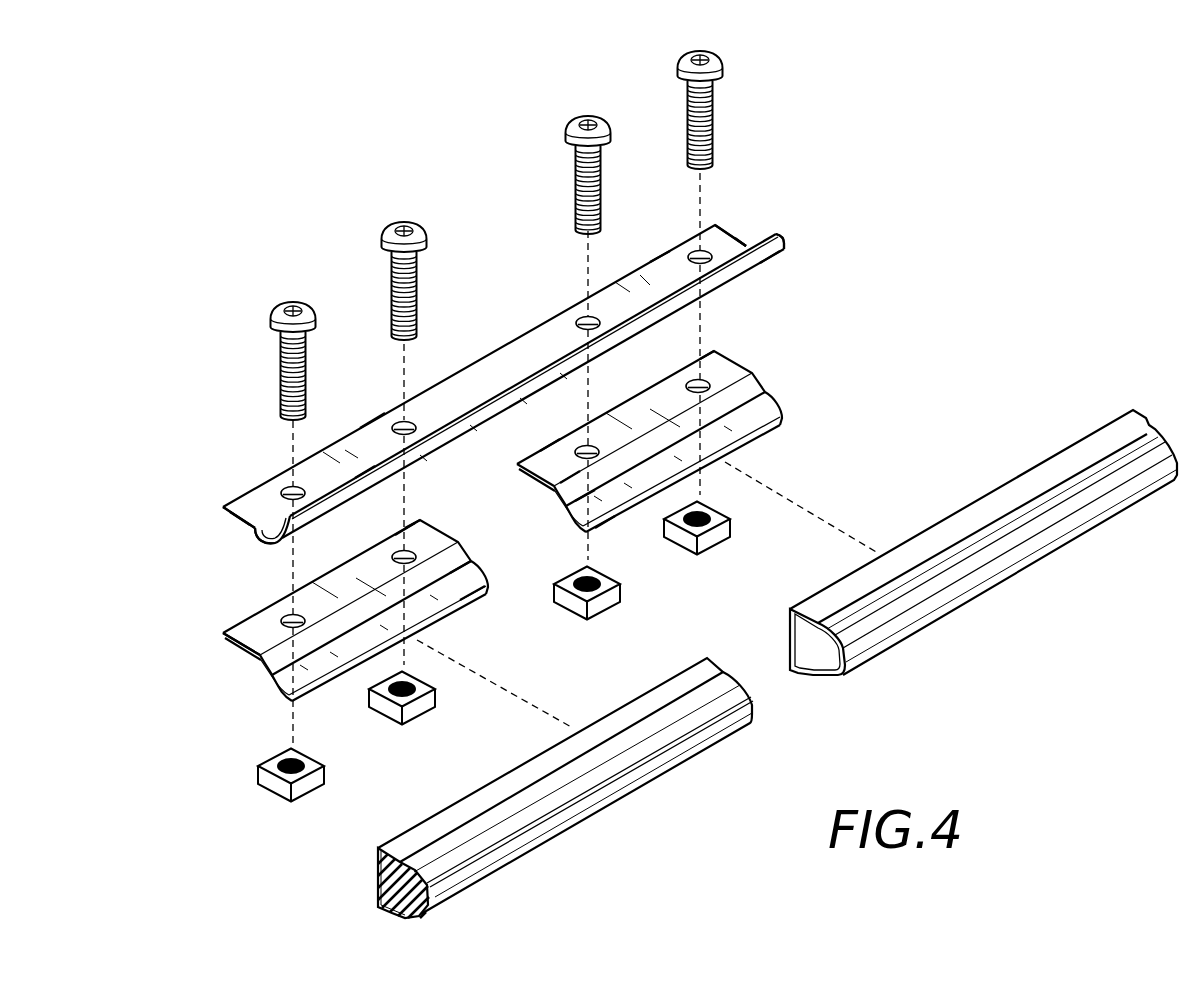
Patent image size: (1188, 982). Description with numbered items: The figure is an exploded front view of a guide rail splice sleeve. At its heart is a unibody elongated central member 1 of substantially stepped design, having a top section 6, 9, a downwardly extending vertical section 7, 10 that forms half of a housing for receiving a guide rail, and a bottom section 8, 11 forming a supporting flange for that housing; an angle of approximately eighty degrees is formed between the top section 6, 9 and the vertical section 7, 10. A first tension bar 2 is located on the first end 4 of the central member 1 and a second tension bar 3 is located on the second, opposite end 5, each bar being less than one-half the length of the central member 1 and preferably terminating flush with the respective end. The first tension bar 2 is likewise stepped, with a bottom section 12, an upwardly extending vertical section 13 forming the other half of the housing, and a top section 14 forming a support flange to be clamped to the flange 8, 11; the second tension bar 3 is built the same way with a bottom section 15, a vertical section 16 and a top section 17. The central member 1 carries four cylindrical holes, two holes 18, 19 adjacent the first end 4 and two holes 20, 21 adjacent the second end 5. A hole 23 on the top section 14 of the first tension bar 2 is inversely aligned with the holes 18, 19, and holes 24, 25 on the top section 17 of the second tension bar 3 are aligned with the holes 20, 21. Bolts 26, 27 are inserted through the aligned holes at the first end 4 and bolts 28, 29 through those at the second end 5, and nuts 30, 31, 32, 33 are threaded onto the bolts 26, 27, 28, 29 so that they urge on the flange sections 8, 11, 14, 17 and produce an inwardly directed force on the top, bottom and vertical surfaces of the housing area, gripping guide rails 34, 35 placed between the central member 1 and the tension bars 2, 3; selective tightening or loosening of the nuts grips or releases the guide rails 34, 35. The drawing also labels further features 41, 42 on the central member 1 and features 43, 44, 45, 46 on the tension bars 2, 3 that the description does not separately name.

The elongated central member 1 is at (490, 365).
The first tension bar 2 is at (265, 653).
The second tension bar 3 is at (755, 378).
The first end 4 is at (372, 418).
The second end 5 is at (660, 256).
The top section 6 is at (364, 488).
The vertical section 7 is at (262, 538).
The bottom section 8 is at (233, 506).
The top section 9 is at (766, 250).
The vertical section 10 is at (775, 232).
The bottom section 11 is at (726, 232).
The bottom section 12 is at (468, 598).
The vertical section 13 is at (462, 578).
The top section 14 is at (432, 543).
The bottom section 15 is at (602, 526).
The vertical section 16 is at (580, 518).
The top section 17 is at (540, 465).
The hole 18 is at (288, 488).
The hole 19 is at (410, 424).
The hole 20 is at (582, 316).
The hole 21 is at (692, 250).
The hole 23 is at (395, 556).
The hole 24 is at (580, 448).
The hole 25 is at (690, 380).
The bolt 26 is at (275, 317).
The bolt 27 is at (386, 236).
The bolt 28 is at (571, 127).
The bolt 29 is at (684, 61).
The nut 30 is at (305, 788).
The nut 31 is at (420, 708).
The nut 32 is at (603, 602).
The nut 33 is at (715, 536).
The guide rail 34 is at (573, 818).
The guide rail 35 is at (1000, 566).
The end edge of rail 41 is at (237, 514).
The end portion of rail 42 is at (752, 228).
The end edge of first clamp plate 43 is at (240, 638).
The top surface of first clamp plate 44 is at (422, 538).
The step of second clamp plate 45 is at (560, 470).
The top surface of second clamp plate 46 is at (740, 370).